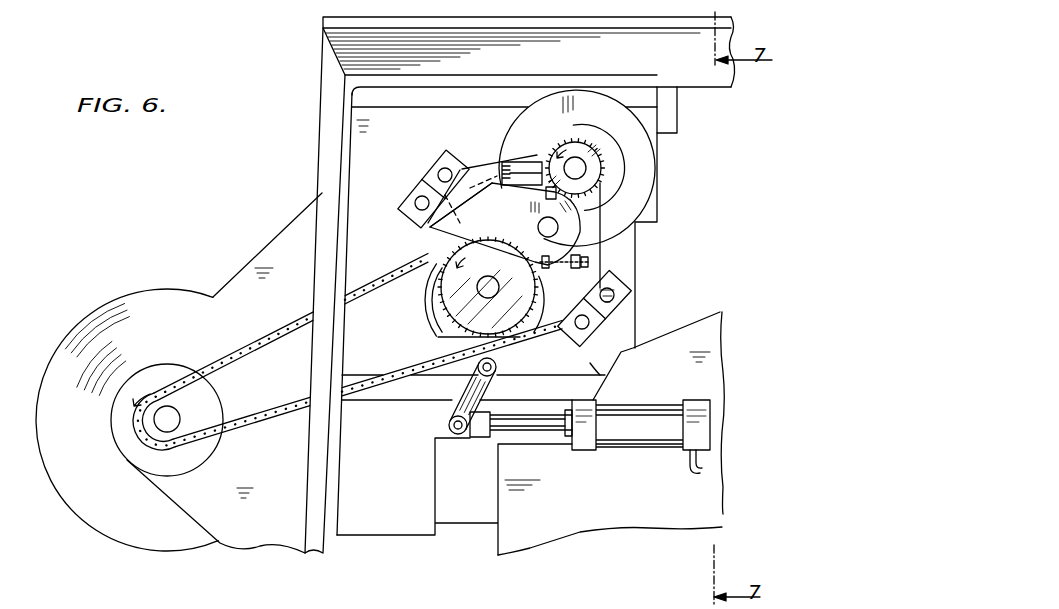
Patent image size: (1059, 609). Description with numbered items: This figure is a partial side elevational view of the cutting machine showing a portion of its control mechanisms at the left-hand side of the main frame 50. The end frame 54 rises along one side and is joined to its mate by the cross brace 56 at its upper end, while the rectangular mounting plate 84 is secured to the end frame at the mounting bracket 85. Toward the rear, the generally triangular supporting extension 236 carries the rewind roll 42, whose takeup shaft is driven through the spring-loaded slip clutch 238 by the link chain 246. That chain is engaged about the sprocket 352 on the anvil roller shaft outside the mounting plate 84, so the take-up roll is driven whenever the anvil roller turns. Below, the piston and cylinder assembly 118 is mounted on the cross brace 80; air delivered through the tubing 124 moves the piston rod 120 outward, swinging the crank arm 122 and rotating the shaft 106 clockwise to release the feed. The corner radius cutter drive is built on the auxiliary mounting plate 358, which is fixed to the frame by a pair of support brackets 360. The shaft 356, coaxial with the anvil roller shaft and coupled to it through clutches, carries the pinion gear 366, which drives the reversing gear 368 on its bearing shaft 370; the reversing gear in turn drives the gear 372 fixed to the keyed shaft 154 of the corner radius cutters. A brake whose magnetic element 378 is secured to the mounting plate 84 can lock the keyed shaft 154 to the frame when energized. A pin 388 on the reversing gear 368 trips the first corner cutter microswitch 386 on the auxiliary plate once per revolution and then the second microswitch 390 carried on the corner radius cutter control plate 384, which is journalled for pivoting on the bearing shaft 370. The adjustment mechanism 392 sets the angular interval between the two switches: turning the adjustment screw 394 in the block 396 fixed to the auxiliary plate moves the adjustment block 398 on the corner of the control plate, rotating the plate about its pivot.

The roll 42 is at (141, 298).
The main frame 50 is at (317, 44).
The end frame 54 is at (328, 66).
The cross brace 56 is at (660, 208).
The cross brace 80 is at (725, 331).
The rectangular mounting plate 84 is at (630, 315).
The mounting bracket 85 is at (677, 115).
The shaft 106 is at (490, 369).
The piston and cylinder assembly 118 is at (651, 458).
The piston rod 120 is at (540, 428).
The crank arm 122 is at (452, 413).
The tubing 124 is at (693, 466).
The keyed shaft 154 is at (583, 160).
The triangular supporting extension 236 is at (272, 256).
The slip clutch 238 is at (136, 461).
The link chain 246 is at (267, 420).
The sprocket 352 is at (428, 295).
The shaft 356 is at (491, 298).
The auxiliary mounting plate 358 is at (433, 227).
The support bracket 360 is at (427, 173).
The pinion gear 366 is at (440, 313).
The reversing gear 368 is at (562, 244).
The bearing shaft 370 is at (582, 262).
The gear 372 is at (603, 163).
The magnetic element 378 is at (603, 107).
The corner radius cutter control plate 384 is at (505, 220).
The first corner cutter microswitch 386 is at (520, 167).
The pin 388 is at (610, 187).
The second microswitch 390 is at (489, 158).
The adjustment mechanism 392 is at (548, 257).
The adjustment screw 394 is at (589, 270).
The block 396 is at (620, 290).
The adjustment block 398 is at (565, 275).